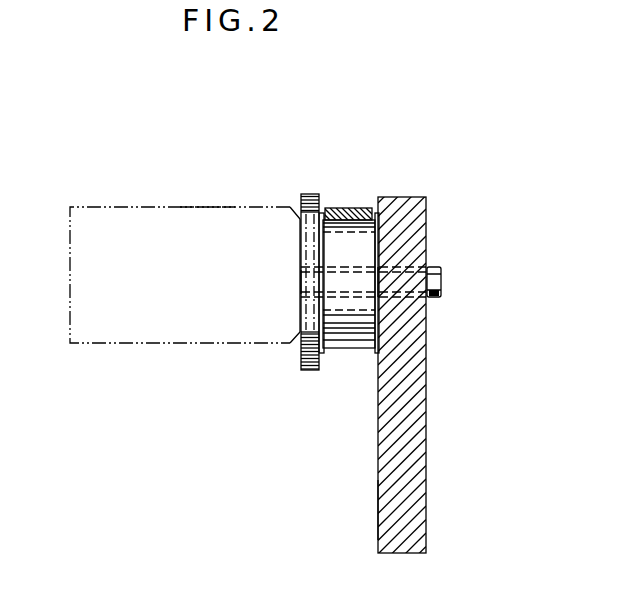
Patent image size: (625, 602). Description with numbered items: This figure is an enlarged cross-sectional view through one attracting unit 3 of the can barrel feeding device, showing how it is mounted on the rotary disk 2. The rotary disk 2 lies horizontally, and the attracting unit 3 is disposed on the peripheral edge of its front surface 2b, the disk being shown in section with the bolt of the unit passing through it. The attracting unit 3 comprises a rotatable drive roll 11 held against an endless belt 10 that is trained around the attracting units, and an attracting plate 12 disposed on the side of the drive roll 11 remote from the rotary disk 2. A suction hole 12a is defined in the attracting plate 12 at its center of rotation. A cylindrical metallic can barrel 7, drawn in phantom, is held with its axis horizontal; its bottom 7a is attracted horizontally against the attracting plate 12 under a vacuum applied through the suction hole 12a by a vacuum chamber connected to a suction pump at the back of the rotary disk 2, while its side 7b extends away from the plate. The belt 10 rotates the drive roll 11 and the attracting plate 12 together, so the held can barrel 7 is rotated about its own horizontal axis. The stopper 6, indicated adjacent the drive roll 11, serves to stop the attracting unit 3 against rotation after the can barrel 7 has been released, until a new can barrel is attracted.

The rotary disk 2 is at (447, 335).
The front surface 2b is at (383, 507).
The attracting unit 3 is at (311, 375).
The stopper 6 is at (340, 190).
The can barrel 7 is at (151, 228).
The bottom 7a is at (300, 238).
The side 7b is at (216, 207).
The endless belt 10 is at (353, 207).
The drive roll 11 is at (368, 245).
The attracting plate 12 is at (309, 195).
The suction hole 12a is at (308, 281).